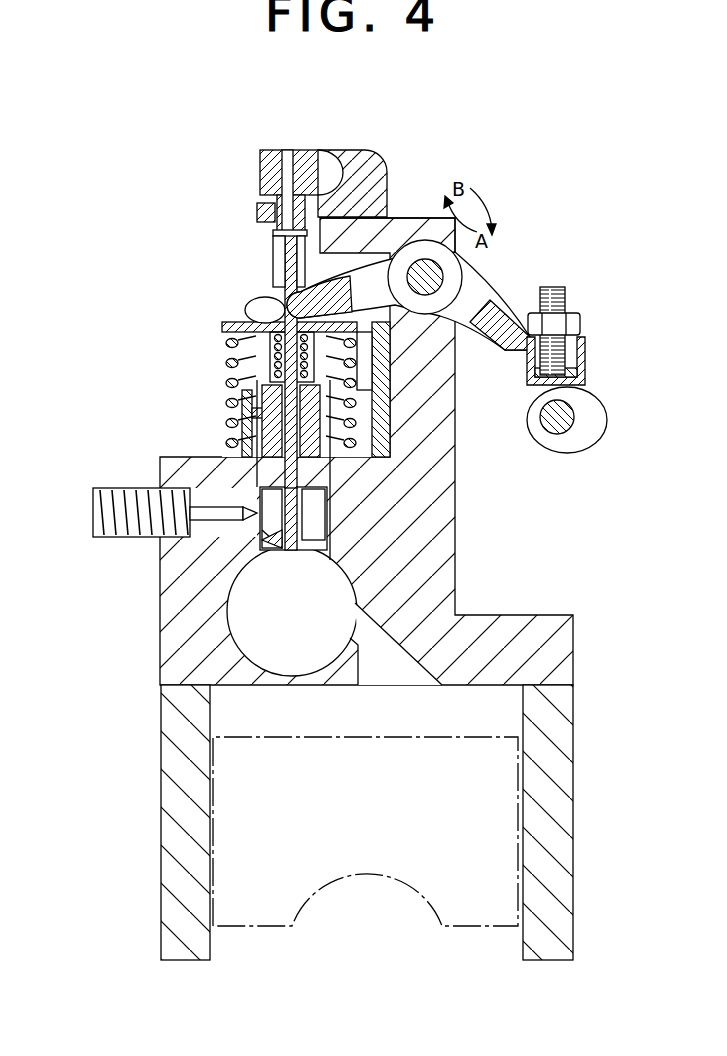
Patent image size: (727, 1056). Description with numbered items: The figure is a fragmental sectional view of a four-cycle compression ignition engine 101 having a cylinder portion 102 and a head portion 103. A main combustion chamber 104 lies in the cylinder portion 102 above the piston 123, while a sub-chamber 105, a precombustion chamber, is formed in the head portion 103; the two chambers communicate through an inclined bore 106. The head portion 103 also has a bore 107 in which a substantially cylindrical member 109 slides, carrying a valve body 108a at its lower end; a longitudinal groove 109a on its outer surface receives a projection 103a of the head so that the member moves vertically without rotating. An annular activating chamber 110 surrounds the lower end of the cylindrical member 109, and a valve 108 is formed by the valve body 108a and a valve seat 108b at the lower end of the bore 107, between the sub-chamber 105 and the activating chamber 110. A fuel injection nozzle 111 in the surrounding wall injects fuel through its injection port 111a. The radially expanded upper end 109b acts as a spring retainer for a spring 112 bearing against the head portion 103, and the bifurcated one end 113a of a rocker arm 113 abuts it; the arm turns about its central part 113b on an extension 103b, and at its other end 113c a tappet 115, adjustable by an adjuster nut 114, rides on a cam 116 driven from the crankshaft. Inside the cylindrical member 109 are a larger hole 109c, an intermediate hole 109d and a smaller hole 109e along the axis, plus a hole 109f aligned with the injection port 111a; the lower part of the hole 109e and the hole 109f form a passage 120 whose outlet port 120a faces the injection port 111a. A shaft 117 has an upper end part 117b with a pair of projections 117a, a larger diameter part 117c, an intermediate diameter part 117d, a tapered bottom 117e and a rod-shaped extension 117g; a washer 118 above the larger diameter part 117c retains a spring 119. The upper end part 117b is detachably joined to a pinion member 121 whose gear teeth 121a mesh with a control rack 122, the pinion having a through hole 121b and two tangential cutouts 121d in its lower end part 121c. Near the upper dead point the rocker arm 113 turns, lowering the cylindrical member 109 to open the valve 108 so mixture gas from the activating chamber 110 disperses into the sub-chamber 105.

The engine 101 is at (256, 206).
The cylinder portion 102 is at (175, 812).
The head portion 103 is at (175, 636).
The projection 103a is at (245, 412).
The extension 103b is at (446, 366).
The main combustion chamber 104 is at (372, 725).
The sub-chamber 105 is at (313, 645).
The bore 106 is at (400, 655).
The bore 107 is at (385, 440).
The valve 108 is at (270, 556).
The valve body 108a is at (291, 575).
The valve seat 108b is at (312, 550).
The cylindrical member 109 is at (270, 414).
The groove 109a is at (268, 392).
The upper end 109b is at (240, 326).
The hole having larger diameter 109c is at (372, 356).
The hole having intermediate diameter 109d is at (360, 418).
The hole having smaller diameter 109e is at (285, 490).
The hole 109f is at (270, 488).
The activating chamber 110 is at (327, 537).
The fuel injection nozzle 111 is at (94, 511).
The injection port 111a is at (262, 527).
The spring 112 is at (245, 372).
The rocker arm 113 is at (518, 298).
The one end 113a is at (262, 303).
The central part 113b is at (448, 283).
The other end 113c is at (586, 343).
The adjuster nut 114 is at (582, 322).
The tappet 115 is at (586, 374).
The cam 116 is at (563, 445).
The shaft 117 is at (285, 438).
The projections 117a is at (262, 180).
The upper end part 117b is at (290, 263).
The larger diameter part 117c is at (322, 394).
The intermediate diameter part 117d is at (323, 466).
The tapered bottom 117e is at (300, 512).
The rod-shaped extension 117g is at (320, 557).
The washer 118 is at (268, 312).
The spring 119 is at (274, 347).
The passage 120 is at (292, 555).
The outlet port 120a is at (262, 492).
The pinion member 121 is at (280, 148).
The gear teeth 121a is at (262, 152).
The through hole 121b is at (320, 152).
The lower end part 121c is at (272, 234).
The cutouts 121d is at (276, 254).
The control rack 122 is at (362, 150).
The piston 123 is at (493, 818).